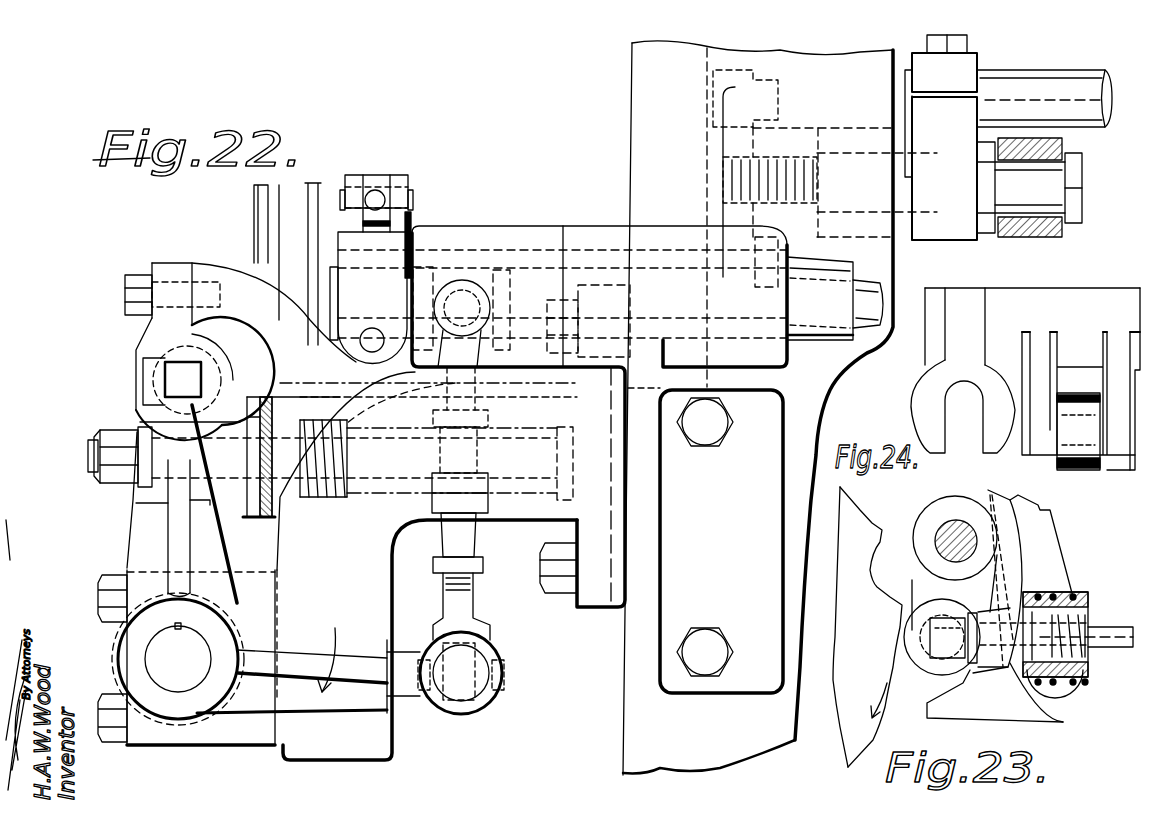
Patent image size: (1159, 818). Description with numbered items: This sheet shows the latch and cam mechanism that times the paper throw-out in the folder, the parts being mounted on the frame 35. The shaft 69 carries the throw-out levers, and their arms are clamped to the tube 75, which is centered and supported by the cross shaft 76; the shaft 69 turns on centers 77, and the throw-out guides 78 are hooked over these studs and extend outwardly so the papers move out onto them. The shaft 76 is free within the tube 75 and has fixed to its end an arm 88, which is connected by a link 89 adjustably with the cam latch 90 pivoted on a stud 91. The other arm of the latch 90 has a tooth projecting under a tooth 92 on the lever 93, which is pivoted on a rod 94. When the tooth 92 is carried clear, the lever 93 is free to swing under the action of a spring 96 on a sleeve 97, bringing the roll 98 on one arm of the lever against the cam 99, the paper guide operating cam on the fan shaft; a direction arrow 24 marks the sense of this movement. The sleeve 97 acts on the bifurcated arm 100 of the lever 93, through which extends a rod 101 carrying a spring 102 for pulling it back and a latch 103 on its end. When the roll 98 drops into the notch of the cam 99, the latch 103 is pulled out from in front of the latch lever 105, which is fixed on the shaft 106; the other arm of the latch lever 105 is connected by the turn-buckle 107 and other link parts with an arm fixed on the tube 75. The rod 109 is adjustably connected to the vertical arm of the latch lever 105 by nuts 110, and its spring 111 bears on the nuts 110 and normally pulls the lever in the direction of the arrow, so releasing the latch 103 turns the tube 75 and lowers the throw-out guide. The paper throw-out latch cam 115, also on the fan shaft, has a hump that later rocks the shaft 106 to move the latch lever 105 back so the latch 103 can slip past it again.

In FIG. 22, the frame 35 is at (792, 60).
In FIG. 22, the shaft 69 is at (1021, 77).
In FIG. 22, the tube 75 is at (731, 520).
In FIG. 22, the cross shaft 76 is at (871, 286).
In FIG. 22, the centers 77 is at (848, 148).
In FIG. 22, the throw-out guides 78 is at (1022, 238).
In FIG. 22, the arm 88 is at (397, 234).
In FIG. 22, the link 89 is at (376, 190).
In FIG. 23, the cam latch 90 is at (1048, 530).
In FIG. 23, the stud 91 is at (1063, 695).
In FIG. 24, the tooth 92 is at (1122, 472).
In FIG. 23, the tooth 92 is at (965, 676).
In FIG. 24, the lever 93 is at (1092, 290).
In FIG. 23, the lever 93 is at (935, 519).
In FIG. 23, the rod 94 is at (973, 500).
In FIG. 23, the spring 96 is at (1073, 598).
In FIG. 23, the sleeve 97 is at (1090, 612).
In FIG. 23, the roll 98 is at (936, 674).
In FIG. 22, the cam 99 is at (303, 192).
In FIG. 23, the cam 99 is at (867, 627).
In FIG. 24, the bifurcated arm 100 is at (927, 402).
In FIG. 23, the bifurcated arm 100 is at (990, 615).
In FIG. 23, the rod 101 is at (1095, 655).
In FIG. 23, the spring 102 is at (1089, 628).
In FIG. 22, the latch 103 is at (190, 376).
In FIG. 22, the latch lever 105 is at (137, 527).
In FIG. 22, the shaft 106 is at (170, 670).
In FIG. 22, the turn-buckle 107 is at (480, 538).
In FIG. 22, the rod 109 is at (86, 460).
In FIG. 22, the nuts 110 is at (118, 430).
In FIG. 22, the spring 111 is at (325, 497).
In FIG. 22, the paper throw-out latch cam 115 is at (262, 228).
In FIG. 23, the direction arrow 24 is at (1052, 577).